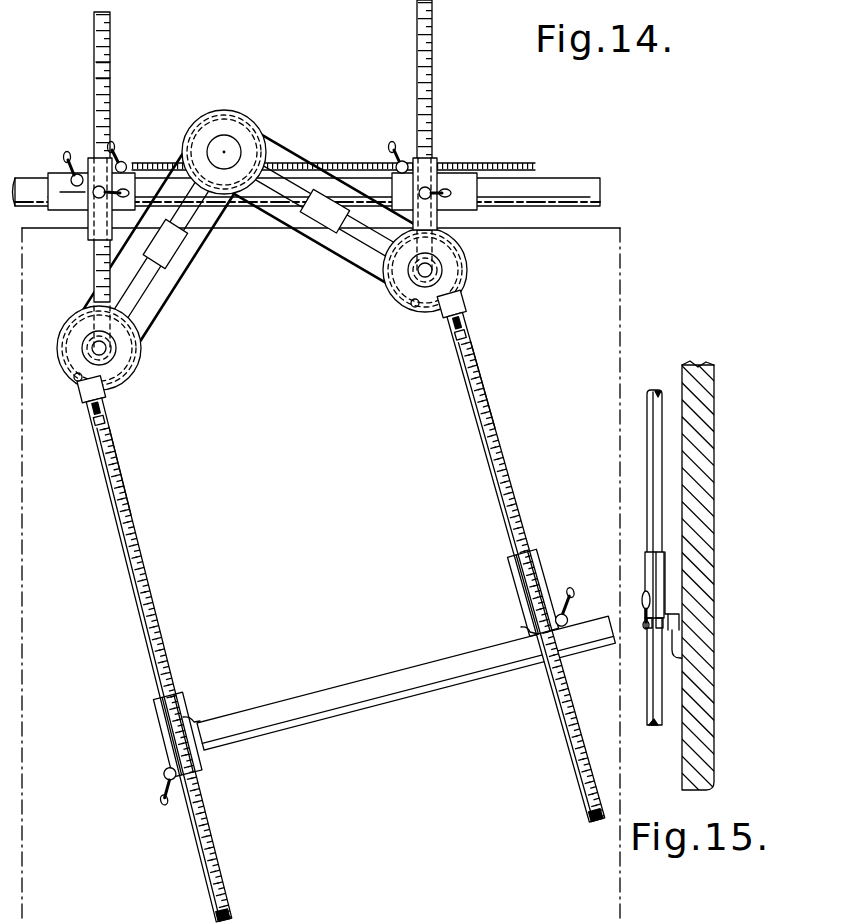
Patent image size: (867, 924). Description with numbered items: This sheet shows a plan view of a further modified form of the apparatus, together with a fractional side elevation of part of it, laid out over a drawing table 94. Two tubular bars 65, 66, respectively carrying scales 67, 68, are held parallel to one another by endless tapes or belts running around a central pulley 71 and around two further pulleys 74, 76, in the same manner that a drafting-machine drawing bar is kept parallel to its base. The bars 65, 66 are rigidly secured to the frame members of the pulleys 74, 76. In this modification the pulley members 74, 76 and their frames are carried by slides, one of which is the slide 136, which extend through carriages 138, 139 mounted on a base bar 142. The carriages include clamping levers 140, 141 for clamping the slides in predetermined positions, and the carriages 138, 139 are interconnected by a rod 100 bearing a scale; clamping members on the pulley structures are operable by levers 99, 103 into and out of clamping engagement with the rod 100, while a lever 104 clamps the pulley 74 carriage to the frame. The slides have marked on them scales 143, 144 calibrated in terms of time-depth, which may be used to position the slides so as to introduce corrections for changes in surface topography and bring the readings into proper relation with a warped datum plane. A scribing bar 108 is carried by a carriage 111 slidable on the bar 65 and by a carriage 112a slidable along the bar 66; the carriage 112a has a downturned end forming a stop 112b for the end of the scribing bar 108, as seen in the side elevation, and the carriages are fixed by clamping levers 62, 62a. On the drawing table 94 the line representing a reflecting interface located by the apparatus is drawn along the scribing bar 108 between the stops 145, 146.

In FIG. 14, the clamping lever 62 is at (158, 791).
In FIG. 14, the clamping lever 62a is at (575, 590).
In FIG. 15, the clamping lever 62a is at (646, 610).
In FIG. 14, the bar 65 is at (106, 438).
In FIG. 14, the bar 66 is at (498, 433).
In FIG. 15, the bar 66 is at (657, 395).
In FIG. 14, the scale 67 is at (118, 503).
In FIG. 14, the scale 68 is at (476, 373).
In FIG. 14, the pulley 71 is at (238, 110).
In FIG. 14, the pulley 74 is at (73, 381).
In FIG. 14, the pulley 76 is at (412, 303).
In FIG. 14, the drawing table 94 is at (604, 278).
In FIG. 15, the drawing table 94 is at (705, 740).
In FIG. 14, the lever 99 is at (392, 143).
In FIG. 14, the rod 100 is at (362, 149).
In FIG. 14, the lever 103 is at (114, 146).
In FIG. 14, the lever 104 is at (66, 156).
In FIG. 14, the scribing bar 108 is at (314, 703).
In FIG. 15, the scribing bar 108 is at (678, 649).
In FIG. 14, the carriage 111 is at (165, 702).
In FIG. 14, the carriage 112a is at (530, 562).
In FIG. 15, the carriage 112a is at (650, 569).
In FIG. 15, the stop 112b is at (676, 622).
In FIG. 14, the slide 136 is at (98, 43).
In FIG. 14, the carriage 138 is at (73, 209).
In FIG. 14, the carriage 139 is at (473, 208).
In FIG. 14, the clamping lever 140 is at (120, 190).
In FIG. 14, the clamping lever 141 is at (437, 190).
In FIG. 14, the base bar 142 is at (579, 186).
In FIG. 14, the scale 143 is at (110, 60).
In FIG. 14, the scale 144 is at (417, 54).
In FIG. 14, the stop 145 is at (197, 719).
In FIG. 14, the stop 146 is at (521, 632).